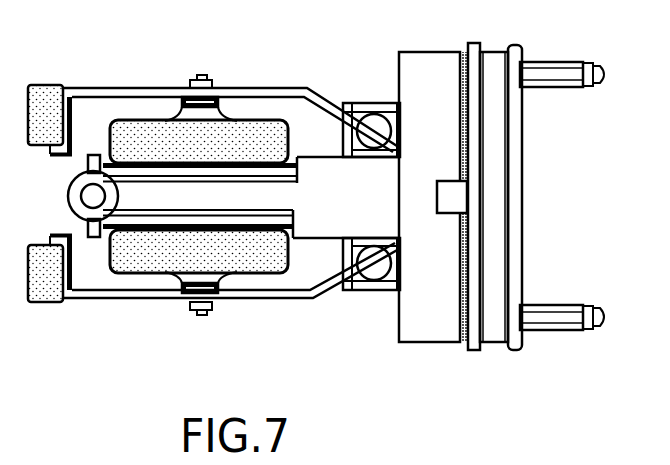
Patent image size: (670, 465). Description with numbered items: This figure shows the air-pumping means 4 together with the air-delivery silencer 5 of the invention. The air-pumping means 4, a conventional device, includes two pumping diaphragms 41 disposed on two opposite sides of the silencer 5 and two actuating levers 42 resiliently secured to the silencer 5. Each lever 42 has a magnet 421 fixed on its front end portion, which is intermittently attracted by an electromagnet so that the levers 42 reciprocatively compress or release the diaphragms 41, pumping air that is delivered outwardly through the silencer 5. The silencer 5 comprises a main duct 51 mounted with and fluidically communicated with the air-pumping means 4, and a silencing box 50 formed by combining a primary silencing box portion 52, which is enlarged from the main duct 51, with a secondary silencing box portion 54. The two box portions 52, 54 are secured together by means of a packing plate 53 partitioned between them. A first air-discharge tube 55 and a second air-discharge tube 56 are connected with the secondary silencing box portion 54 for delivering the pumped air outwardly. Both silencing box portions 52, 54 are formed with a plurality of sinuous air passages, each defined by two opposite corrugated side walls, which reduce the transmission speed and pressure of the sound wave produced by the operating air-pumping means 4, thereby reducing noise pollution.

The air-pumping means 4 is at (252, 277).
The pumping diaphragm 41 is at (138, 123).
The actuating lever 42 is at (270, 90).
The magnet 421 is at (50, 302).
The air-delivery silencer 5 is at (473, 204).
The silencing box 50 is at (469, 204).
The main duct 51 is at (312, 197).
The primary silencing box portion 52 is at (423, 343).
The packing plate 53 is at (462, 350).
The secondary silencing box portion 54 is at (497, 345).
The first air-discharge tube 55 is at (553, 88).
The second air-discharge tube 56 is at (567, 331).